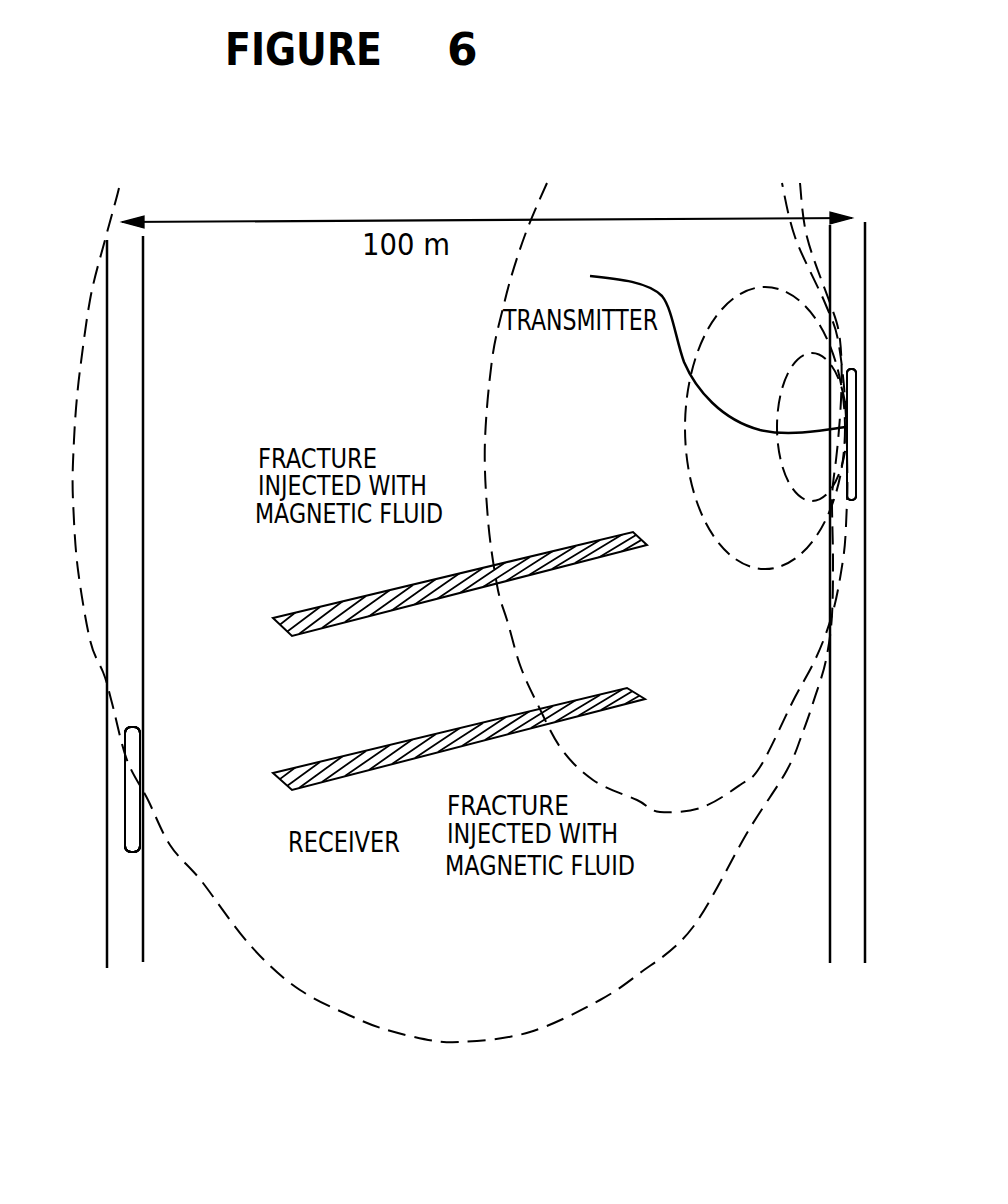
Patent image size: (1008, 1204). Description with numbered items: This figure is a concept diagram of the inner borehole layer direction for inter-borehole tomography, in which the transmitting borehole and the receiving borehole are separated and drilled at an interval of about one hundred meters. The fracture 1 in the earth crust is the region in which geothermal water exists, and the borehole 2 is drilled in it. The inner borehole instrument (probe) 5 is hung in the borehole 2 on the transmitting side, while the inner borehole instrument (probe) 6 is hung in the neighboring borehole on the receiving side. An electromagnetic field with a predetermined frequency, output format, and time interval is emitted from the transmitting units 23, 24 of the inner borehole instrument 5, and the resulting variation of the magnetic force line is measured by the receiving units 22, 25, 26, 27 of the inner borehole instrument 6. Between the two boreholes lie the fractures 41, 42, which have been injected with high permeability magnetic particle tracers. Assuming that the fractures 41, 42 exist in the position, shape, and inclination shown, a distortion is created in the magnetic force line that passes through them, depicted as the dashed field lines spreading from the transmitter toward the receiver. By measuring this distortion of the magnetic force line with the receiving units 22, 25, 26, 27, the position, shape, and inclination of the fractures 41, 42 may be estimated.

The fracture 1 is at (107, 952).
The borehole 2 is at (830, 940).
The inner borehole instrument (probe) 5 is at (856, 419).
The inner borehole instrument (probe) 6 is at (124, 798).
The receiving unit 22 is at (141, 818).
The transmitting unit 23 is at (699, 372).
The transmitting unit 24 is at (699, 385).
The receiving unit 25 is at (193, 789).
The receiving unit 26 is at (195, 793).
The receiving unit 27 is at (195, 809).
The fracture 41 is at (336, 605).
The fracture 42 is at (480, 744).